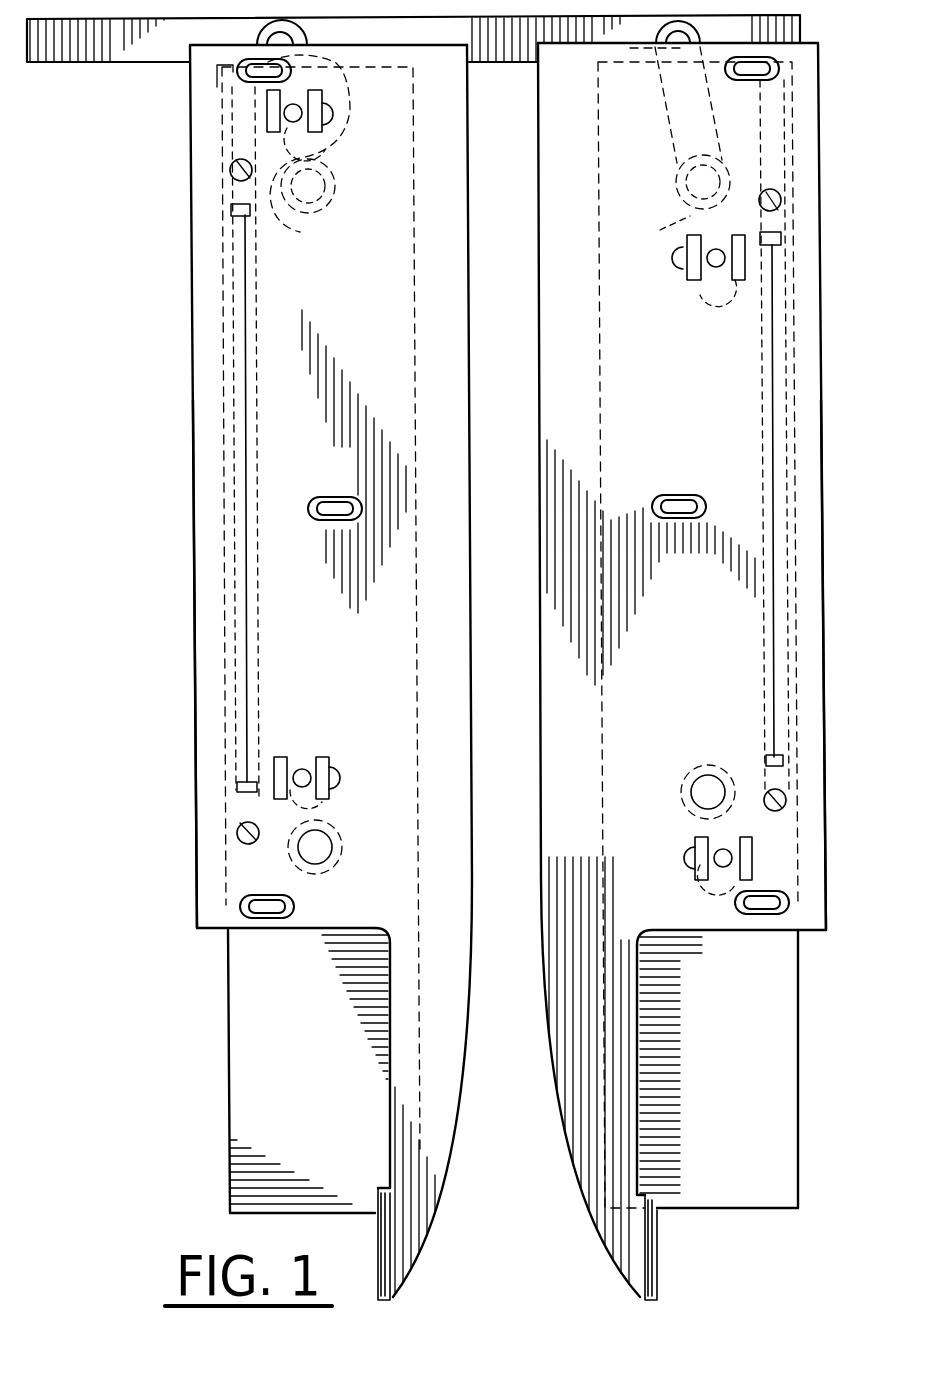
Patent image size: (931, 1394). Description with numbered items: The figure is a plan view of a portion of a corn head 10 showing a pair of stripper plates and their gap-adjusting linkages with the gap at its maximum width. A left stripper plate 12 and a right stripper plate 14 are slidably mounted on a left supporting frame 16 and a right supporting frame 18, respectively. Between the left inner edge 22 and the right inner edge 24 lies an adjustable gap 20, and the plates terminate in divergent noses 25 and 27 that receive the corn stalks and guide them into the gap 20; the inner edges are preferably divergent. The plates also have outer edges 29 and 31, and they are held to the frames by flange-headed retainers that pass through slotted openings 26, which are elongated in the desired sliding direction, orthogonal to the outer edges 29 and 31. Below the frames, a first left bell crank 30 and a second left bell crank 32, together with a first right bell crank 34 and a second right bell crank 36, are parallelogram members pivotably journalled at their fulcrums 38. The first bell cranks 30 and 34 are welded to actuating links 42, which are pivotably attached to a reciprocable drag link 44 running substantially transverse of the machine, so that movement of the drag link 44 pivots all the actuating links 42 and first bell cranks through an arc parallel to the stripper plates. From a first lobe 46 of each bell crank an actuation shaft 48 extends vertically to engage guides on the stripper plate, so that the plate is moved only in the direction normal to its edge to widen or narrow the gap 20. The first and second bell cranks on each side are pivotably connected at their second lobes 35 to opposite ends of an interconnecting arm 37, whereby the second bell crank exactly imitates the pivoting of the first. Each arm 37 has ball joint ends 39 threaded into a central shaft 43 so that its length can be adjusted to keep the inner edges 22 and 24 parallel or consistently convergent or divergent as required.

The corn head 10 is at (150, 250).
The left stripper plate 12 is at (302, 597).
The right stripper plate 14 is at (701, 663).
The left supporting frame 16 is at (321, 1013).
The right supporting frame 18 is at (724, 1013).
The adjustable gap 20 is at (517, 671).
The left inner edge 22 is at (470, 372).
The right inner edge 24 is at (540, 513).
The left divergent nose 25 is at (400, 1297).
The slotted openings 26 is at (237, 72).
The right divergent nose 27 is at (636, 1297).
The left outer edge 29 is at (196, 665).
The first left bell crank 30 is at (280, 215).
The right outer edge 31 is at (823, 640).
The second left bell crank 32 is at (340, 830).
The first right bell crank 34 is at (653, 235).
The second lobes 35 is at (232, 152).
The second right bell crank 36 is at (690, 815).
The interconnecting arm 37 is at (232, 502).
The fulcrums 38 is at (330, 195).
The ball joint ends 39 is at (232, 195).
The actuating links 42 is at (340, 84).
The central shaft 43 is at (222, 328).
The drag link 44 is at (84, 66).
The first lobe 46 is at (330, 155).
The actuation shaft 48 is at (303, 138).